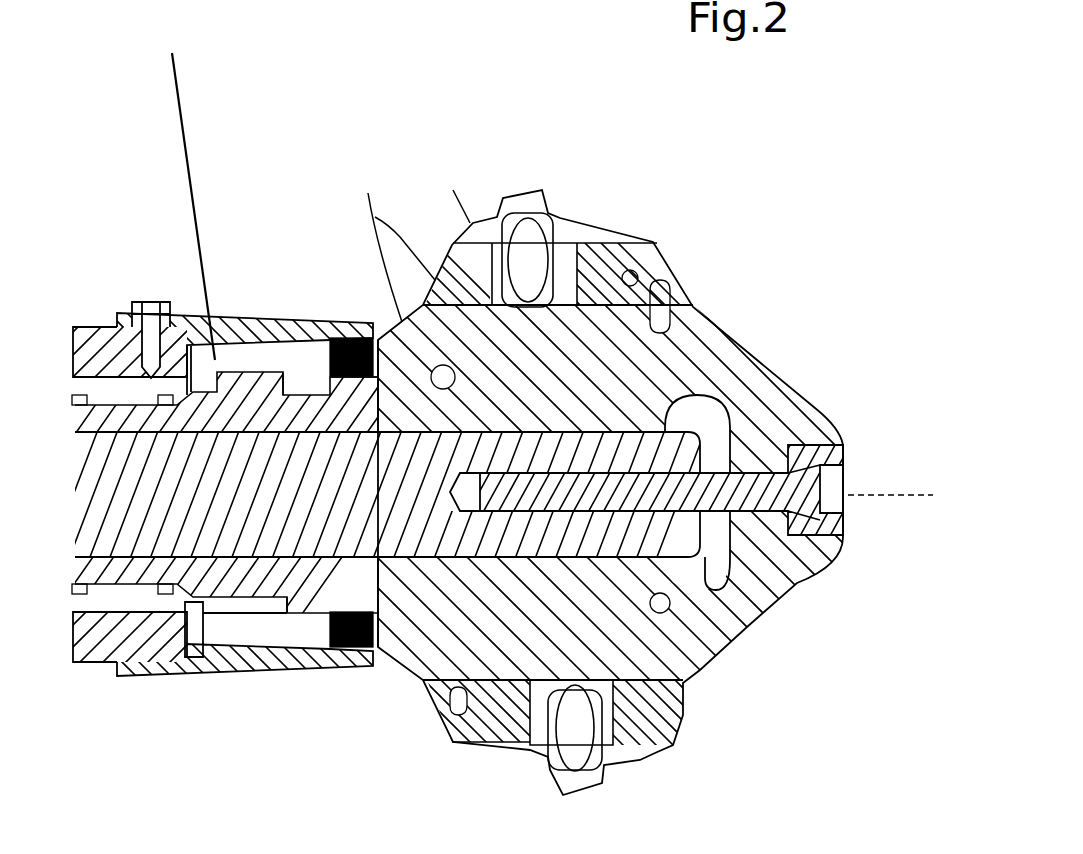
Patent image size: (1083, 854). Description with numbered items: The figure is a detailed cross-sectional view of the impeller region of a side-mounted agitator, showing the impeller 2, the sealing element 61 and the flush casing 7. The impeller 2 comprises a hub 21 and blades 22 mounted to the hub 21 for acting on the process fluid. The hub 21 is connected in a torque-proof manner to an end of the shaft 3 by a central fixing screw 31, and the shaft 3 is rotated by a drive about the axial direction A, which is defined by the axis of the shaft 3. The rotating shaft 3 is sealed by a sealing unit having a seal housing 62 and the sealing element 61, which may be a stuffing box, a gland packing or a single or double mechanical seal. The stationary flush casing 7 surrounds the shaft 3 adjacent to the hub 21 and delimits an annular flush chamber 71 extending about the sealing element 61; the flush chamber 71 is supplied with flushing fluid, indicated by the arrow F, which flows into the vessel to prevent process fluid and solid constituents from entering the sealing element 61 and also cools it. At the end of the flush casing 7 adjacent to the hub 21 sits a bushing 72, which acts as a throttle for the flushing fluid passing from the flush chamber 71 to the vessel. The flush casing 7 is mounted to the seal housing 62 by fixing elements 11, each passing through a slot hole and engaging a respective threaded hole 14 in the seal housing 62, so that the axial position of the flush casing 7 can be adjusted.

The impeller 2 is at (718, 285).
The shaft 3 is at (153, 530).
The flush casing 7 is at (245, 315).
The fixing element 11 is at (152, 300).
The threaded hole 14 is at (137, 343).
The hub 21 is at (687, 653).
The blades 22 is at (426, 224).
The central fixing screw 31 is at (830, 537).
The sealing element 61 is at (318, 668).
The seal housing 62 is at (100, 324).
The flush chamber 71 is at (283, 355).
The bushing 72 is at (351, 337).
The flushing fluid F is at (180, 100).
The axial direction A is at (921, 493).